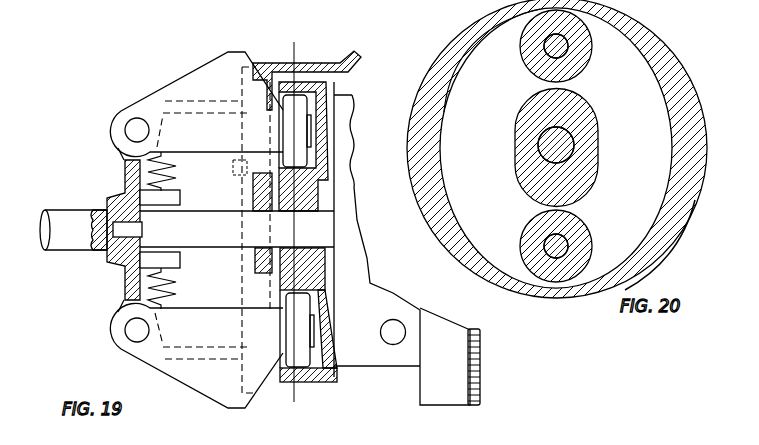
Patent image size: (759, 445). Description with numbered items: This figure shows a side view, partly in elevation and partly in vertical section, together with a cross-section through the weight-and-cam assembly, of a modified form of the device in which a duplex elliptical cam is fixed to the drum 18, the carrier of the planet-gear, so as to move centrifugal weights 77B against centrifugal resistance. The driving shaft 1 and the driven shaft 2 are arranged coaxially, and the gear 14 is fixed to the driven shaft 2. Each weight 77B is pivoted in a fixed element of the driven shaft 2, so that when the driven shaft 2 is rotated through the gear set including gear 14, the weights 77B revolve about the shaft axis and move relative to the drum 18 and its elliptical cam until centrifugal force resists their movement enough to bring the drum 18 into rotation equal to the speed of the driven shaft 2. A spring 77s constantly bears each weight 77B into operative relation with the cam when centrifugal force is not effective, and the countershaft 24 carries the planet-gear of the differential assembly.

In FIG. 19, the driving shaft 1 is at (355, 216).
In FIG. 20, the driving shaft 1 is at (522, 130).
In FIG. 19, the driven shaft 2 is at (67, 210).
In FIG. 19, the gear 14 is at (340, 53).
In FIG. 19, the drum 18 is at (420, 395).
In FIG. 20, the drum 18 is at (515, 165).
In FIG. 19, the countershaft 24 is at (385, 322).
In FIG. 19, the centrifugal weight 77B is at (189, 72).
In FIG. 20, the centrifugal weight 77B is at (568, 48).
In FIG. 19, the spring 77s is at (176, 292).